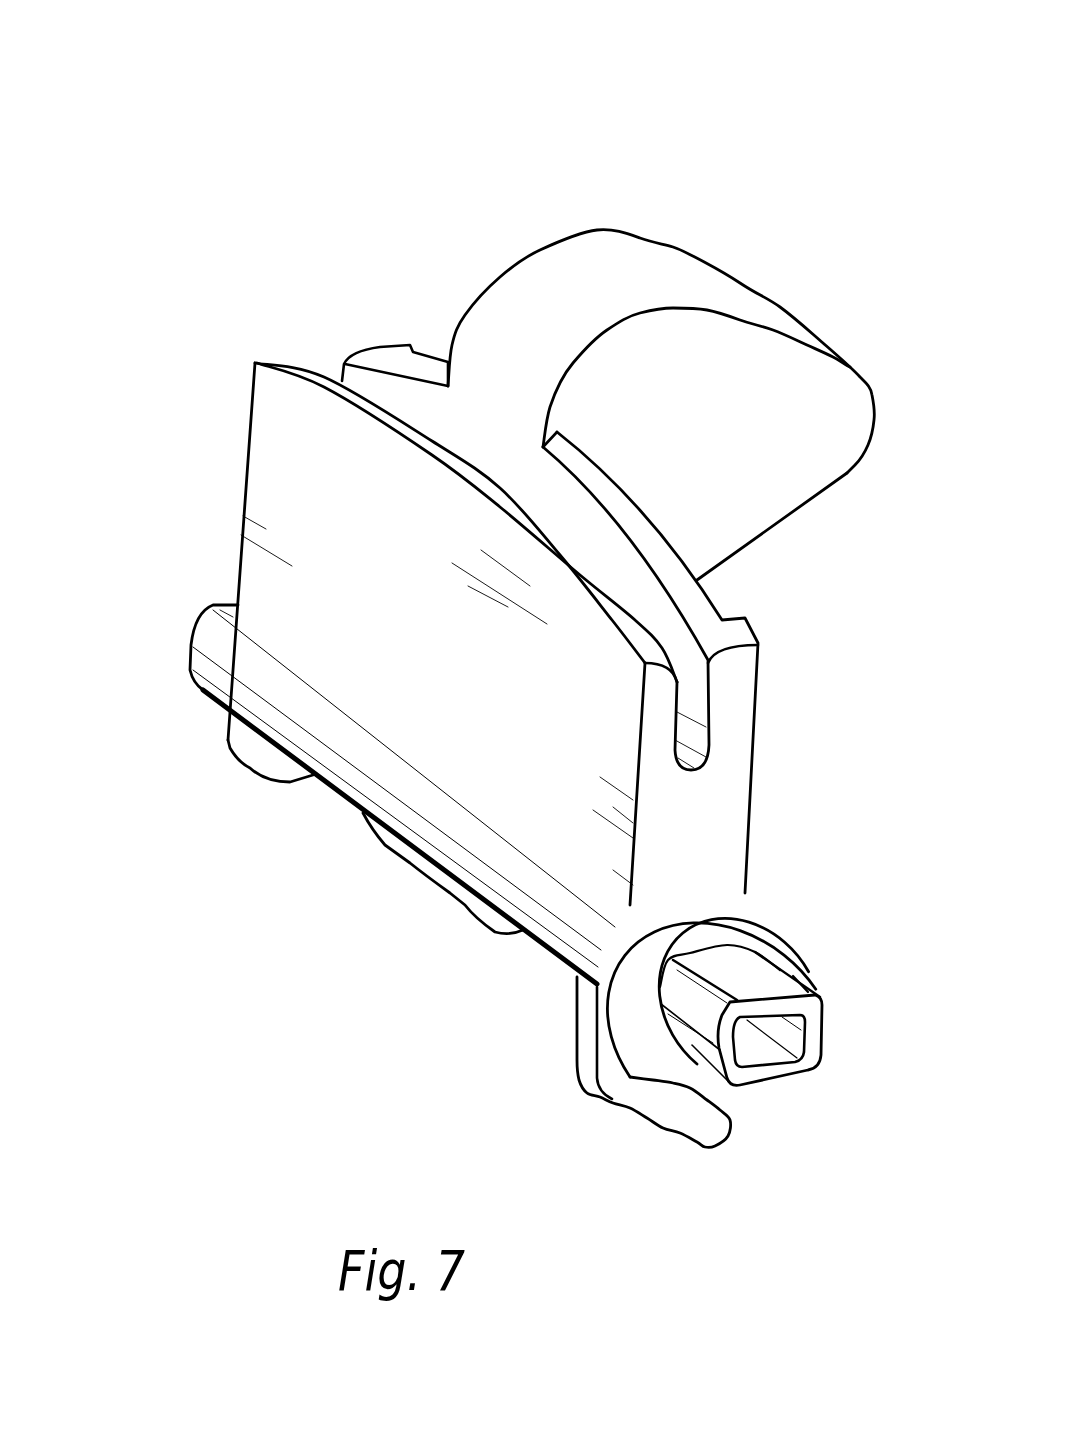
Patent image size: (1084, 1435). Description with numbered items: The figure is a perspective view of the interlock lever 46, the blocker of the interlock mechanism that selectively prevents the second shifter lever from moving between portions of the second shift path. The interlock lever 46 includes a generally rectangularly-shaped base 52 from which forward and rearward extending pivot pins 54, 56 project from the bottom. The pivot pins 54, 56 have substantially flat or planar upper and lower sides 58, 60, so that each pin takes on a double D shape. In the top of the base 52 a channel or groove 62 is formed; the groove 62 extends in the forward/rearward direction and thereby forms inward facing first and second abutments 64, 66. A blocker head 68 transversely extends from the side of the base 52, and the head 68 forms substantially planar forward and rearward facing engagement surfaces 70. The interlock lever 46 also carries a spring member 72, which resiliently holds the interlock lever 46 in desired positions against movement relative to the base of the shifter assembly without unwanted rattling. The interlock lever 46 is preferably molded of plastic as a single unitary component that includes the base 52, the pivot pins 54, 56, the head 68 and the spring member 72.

The interlock lever 46 is at (508, 152).
The base 52 is at (347, 802).
The forward extending pivot pin 54 is at (190, 648).
The rearward extending pivot pin 56 is at (821, 1020).
The upper side 58 is at (800, 976).
The lower side 60 is at (774, 1080).
The groove 62 is at (323, 354).
The first abutment 64 is at (366, 345).
The second abutment 66 is at (757, 690).
The blocker head 68 is at (773, 306).
The engagement surfaces 70 is at (786, 517).
The spring member 72 is at (640, 1122).